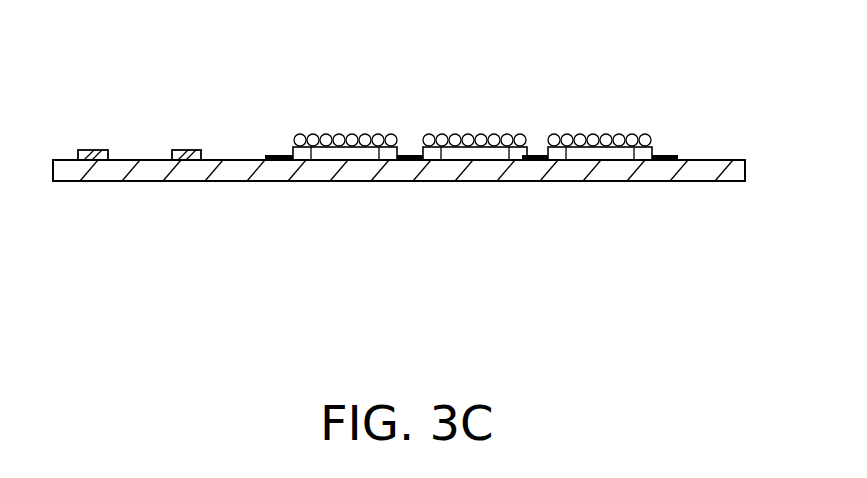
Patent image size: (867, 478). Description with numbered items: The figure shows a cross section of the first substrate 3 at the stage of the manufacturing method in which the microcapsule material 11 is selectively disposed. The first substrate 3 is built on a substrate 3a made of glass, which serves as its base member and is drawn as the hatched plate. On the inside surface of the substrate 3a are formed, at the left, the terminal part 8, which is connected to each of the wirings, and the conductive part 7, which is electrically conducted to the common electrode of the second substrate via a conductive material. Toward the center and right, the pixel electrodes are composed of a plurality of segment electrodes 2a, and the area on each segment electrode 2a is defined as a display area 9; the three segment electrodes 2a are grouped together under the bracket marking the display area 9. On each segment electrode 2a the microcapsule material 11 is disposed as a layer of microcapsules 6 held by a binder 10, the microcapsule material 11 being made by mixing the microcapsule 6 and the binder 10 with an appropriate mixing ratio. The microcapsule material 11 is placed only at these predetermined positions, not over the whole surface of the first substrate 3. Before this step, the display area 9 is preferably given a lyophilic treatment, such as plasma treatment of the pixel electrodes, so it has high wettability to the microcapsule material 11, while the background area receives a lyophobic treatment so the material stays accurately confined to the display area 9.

The segment electrode 2a is at (473, 140).
The first substrate 3 is at (225, 190).
The substrate 3a is at (137, 183).
The microcapsule 6 is at (449, 135).
The conductive part 7 is at (190, 149).
The terminal part 8 is at (95, 149).
The display area 9 is at (475, 165).
The binder 10 is at (502, 106).
The microcapsule material 11 is at (478, 87).